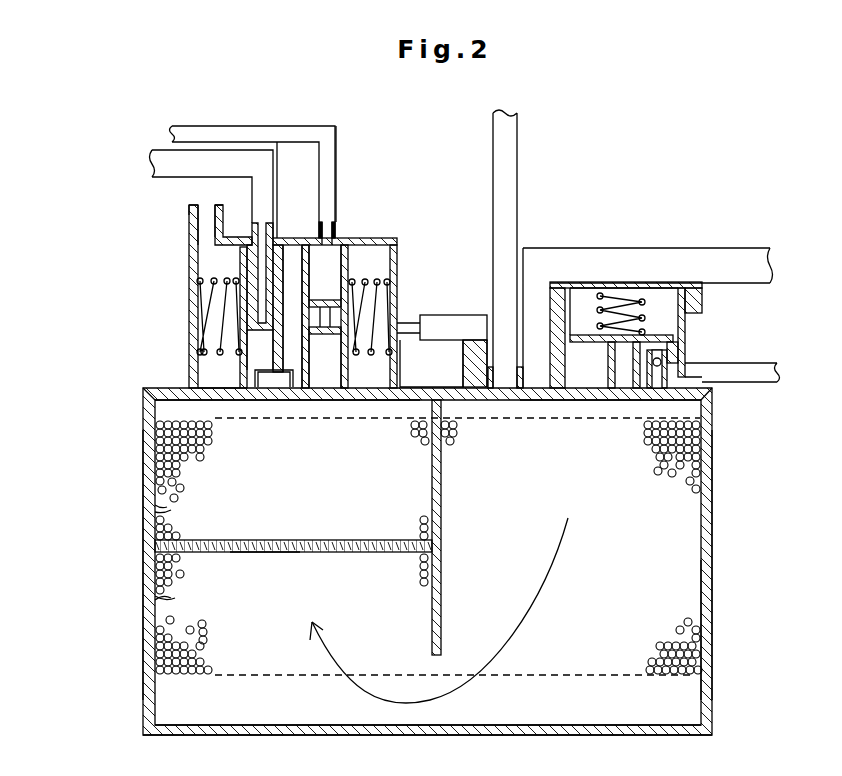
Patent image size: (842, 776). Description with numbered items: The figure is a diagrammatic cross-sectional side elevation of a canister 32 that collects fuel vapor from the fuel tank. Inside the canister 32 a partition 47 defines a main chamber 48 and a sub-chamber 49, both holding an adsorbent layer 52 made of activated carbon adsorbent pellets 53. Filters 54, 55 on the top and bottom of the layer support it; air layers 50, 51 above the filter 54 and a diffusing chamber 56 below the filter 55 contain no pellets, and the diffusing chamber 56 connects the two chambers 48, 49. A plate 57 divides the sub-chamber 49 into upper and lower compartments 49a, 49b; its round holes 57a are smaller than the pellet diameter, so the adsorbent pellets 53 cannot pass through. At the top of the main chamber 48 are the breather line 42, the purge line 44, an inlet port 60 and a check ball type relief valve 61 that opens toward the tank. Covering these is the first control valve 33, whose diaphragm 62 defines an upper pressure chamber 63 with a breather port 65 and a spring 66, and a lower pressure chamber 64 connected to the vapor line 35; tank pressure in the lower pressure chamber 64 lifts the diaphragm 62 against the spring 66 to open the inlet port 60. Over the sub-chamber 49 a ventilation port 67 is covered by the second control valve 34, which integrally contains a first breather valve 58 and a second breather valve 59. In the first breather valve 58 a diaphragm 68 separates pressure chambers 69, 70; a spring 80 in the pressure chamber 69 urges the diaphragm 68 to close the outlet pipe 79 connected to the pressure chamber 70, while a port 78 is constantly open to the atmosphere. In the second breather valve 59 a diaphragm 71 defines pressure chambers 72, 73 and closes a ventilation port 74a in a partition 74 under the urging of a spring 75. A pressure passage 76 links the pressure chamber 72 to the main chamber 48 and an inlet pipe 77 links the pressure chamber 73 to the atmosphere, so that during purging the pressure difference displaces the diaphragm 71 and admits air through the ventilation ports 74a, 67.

The canister 32 is at (712, 495).
The first control valve 33 is at (640, 280).
The second control valve 34 is at (329, 242).
The vapor line 35 is at (758, 384).
The breather line 42 is at (705, 248).
The purge line 44 is at (511, 161).
The partition 47 is at (445, 504).
The main chamber 48 is at (703, 606).
The sub-chamber 49 is at (68, 566).
The upper compartment 49a is at (156, 512).
The lower compartment 49b is at (167, 593).
The air layer 50 is at (702, 425).
The air layer 51 is at (155, 403).
The adsorbent layer 52 is at (151, 614).
The adsorbent pellets 53 is at (202, 470).
The filter 54 is at (503, 422).
The filter 55 is at (547, 673).
The diffusing chamber 56 is at (705, 700).
The plate 57 is at (338, 540).
The round holes 57a is at (254, 553).
The first breather valve 58 is at (189, 305).
The second breather valve 59 is at (400, 246).
The inlet port 60 is at (626, 400).
The relief valve 61 is at (690, 366).
The diaphragm 62 is at (679, 337).
The upper pressure chamber 63 is at (579, 279).
The lower pressure chamber 64 is at (588, 398).
The breather port 65 is at (702, 295).
The spring 66 is at (592, 285).
The ventilation port 67 is at (272, 398).
The diaphragm 68 is at (240, 248).
The pressure chamber 69 is at (199, 372).
The pressure chamber 70 is at (289, 244).
The diaphragm 71 is at (348, 244).
The pressure chamber 72 is at (402, 359).
The pressure chamber 73 is at (333, 398).
The partition 74 is at (290, 398).
The ventilation port 74a is at (332, 178).
The spring 75 is at (400, 280).
The pressure passage 76 is at (463, 314).
The inlet pipe 77 is at (214, 129).
The port 78 is at (195, 225).
The outlet pipe 79 is at (154, 166).
The spring 80 is at (194, 342).